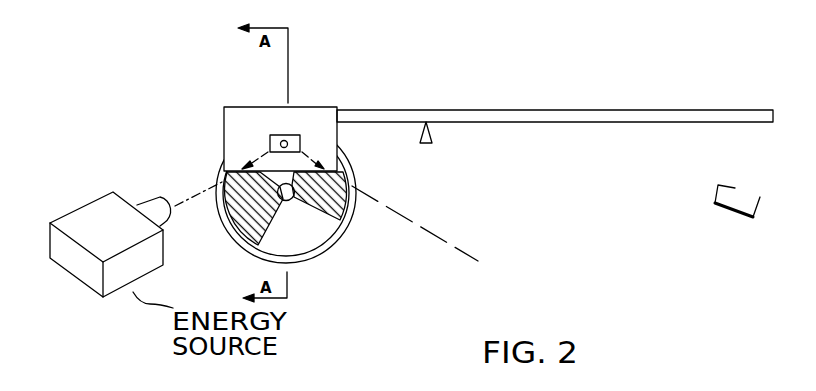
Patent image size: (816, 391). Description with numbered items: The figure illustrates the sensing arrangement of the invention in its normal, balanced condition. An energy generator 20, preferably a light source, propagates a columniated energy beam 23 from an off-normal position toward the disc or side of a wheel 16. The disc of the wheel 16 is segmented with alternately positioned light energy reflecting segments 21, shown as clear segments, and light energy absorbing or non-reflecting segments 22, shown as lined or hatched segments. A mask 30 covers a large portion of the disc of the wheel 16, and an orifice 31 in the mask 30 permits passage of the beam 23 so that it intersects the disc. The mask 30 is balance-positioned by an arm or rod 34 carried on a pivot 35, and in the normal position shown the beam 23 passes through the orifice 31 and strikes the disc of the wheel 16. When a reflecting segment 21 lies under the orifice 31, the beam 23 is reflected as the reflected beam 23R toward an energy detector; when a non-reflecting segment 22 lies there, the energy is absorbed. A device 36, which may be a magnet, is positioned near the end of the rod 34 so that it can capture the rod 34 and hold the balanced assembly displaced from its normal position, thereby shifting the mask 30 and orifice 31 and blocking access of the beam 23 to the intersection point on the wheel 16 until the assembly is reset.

The energy generator 20 is at (70, 283).
The energy beam 23 is at (186, 191).
The reflected beam 23R is at (476, 253).
The wheel 16 is at (358, 217).
The reflecting segments 21 is at (307, 238).
The non-reflecting segments 22 is at (256, 243).
The mask 30 is at (223, 133).
The orifice 31 is at (285, 130).
The rod 34 is at (495, 110).
The pivot 35 is at (434, 137).
The device 36 is at (717, 202).